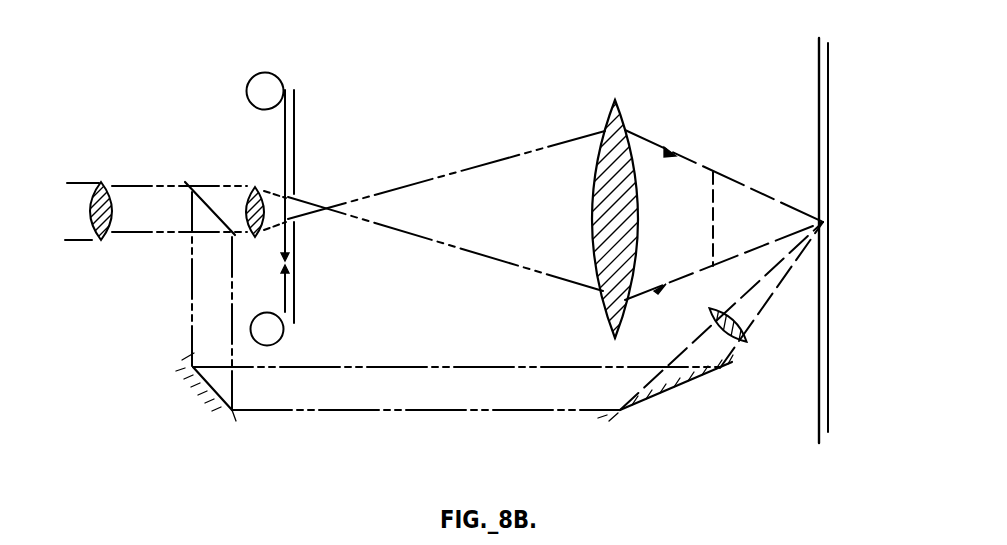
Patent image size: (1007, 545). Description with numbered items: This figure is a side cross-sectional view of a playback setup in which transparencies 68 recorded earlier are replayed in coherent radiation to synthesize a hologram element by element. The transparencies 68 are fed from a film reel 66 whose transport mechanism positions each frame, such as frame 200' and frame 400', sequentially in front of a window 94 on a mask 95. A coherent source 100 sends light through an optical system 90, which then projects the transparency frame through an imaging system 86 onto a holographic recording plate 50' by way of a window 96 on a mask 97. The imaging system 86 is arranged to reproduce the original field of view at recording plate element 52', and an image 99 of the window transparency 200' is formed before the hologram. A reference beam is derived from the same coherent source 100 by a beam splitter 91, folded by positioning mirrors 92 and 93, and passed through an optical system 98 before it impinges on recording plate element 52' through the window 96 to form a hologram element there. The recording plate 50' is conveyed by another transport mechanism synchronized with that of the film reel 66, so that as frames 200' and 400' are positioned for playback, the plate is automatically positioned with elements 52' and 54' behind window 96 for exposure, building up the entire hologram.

The recording plate 50' is at (845, 240).
The recording plate element 52' is at (848, 224).
The recording plate element 54' is at (849, 237).
The film reel 66 is at (265, 92).
The transparencies 68 is at (292, 98).
The imaging system 86 is at (610, 104).
The optical system 90 is at (253, 186).
The beam splitter 91 is at (198, 176).
The positioning mirror 92 is at (215, 402).
The positioning mirror 93 is at (622, 412).
The window 94 is at (298, 208).
The mask 95 is at (295, 278).
The window 96 is at (818, 226).
The mask 97 is at (818, 325).
The optical system 98 is at (744, 342).
The image 99 is at (717, 188).
The coherent source 100 is at (80, 217).
The frame 200' is at (319, 189).
The frame 400' is at (302, 323).